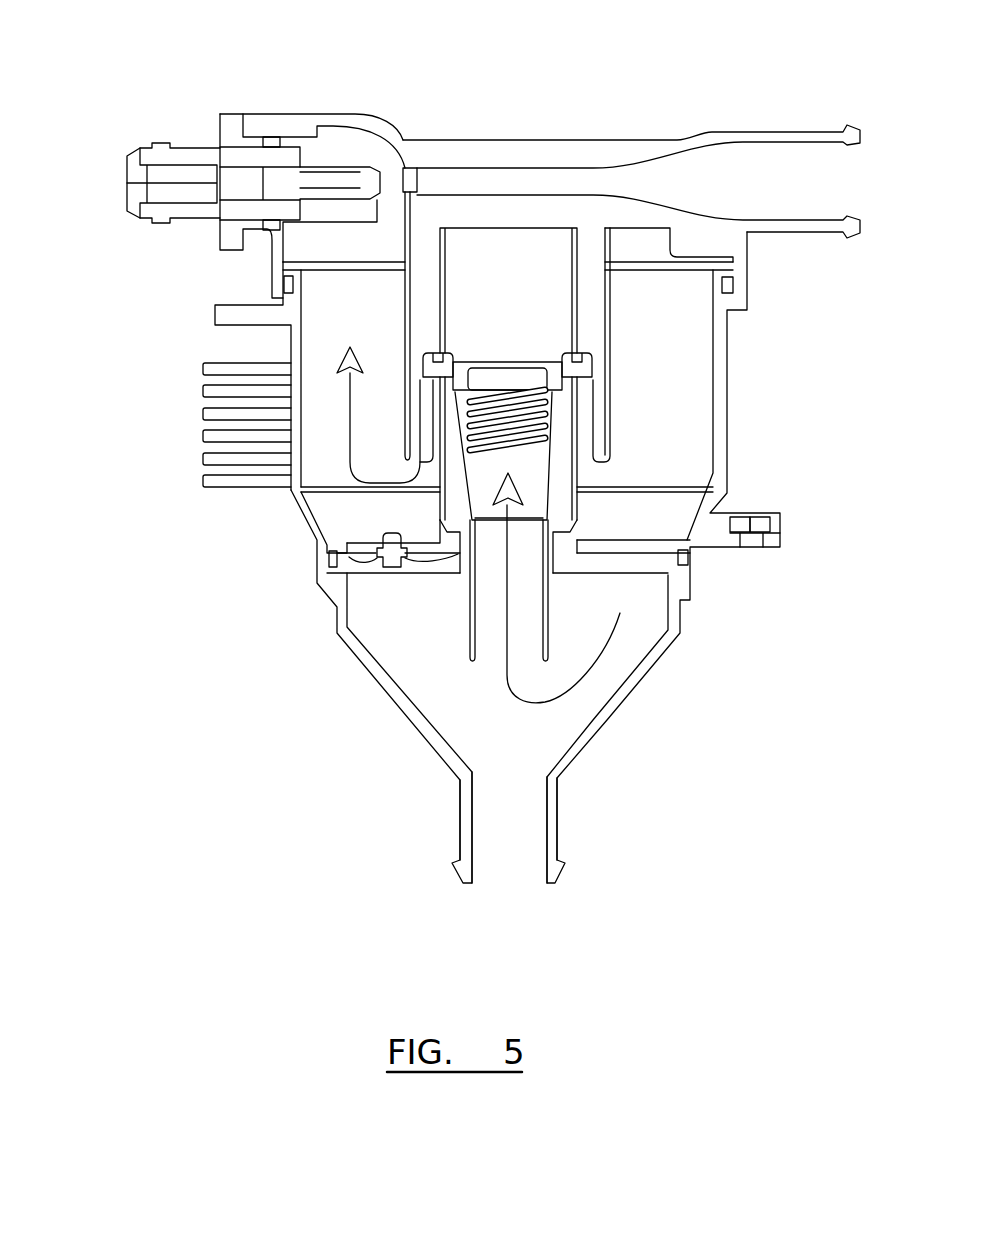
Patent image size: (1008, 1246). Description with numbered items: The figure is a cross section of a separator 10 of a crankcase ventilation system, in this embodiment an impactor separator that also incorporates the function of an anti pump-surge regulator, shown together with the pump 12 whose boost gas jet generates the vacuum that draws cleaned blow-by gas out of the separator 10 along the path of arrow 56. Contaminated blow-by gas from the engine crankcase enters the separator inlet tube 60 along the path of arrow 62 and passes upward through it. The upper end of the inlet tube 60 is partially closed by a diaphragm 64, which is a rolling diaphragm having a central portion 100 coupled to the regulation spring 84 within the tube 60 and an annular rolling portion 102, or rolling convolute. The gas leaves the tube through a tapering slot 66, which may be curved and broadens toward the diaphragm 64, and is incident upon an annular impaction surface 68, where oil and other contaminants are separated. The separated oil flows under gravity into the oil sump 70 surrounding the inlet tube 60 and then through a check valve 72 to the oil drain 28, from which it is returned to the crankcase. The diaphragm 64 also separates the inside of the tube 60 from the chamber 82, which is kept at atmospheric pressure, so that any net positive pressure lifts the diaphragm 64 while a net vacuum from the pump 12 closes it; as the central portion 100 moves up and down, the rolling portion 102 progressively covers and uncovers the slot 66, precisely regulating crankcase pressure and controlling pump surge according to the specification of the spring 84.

The separator 10 is at (118, 575).
The pump 12 is at (118, 93).
The oil drain 28 is at (507, 843).
The arrow 56 is at (350, 428).
The separator inlet tube 60 is at (460, 650).
The arrow 62 is at (583, 680).
The diaphragm 64 is at (487, 367).
The slot 66 is at (487, 391).
The annular impaction surface 68 is at (610, 440).
The oil sump 70 is at (343, 543).
The check valve 72 is at (390, 563).
The chamber 82 is at (453, 253).
The regulation spring 84 is at (573, 490).
The central portion 100 is at (512, 367).
The annular rolling portion 102 is at (447, 384).